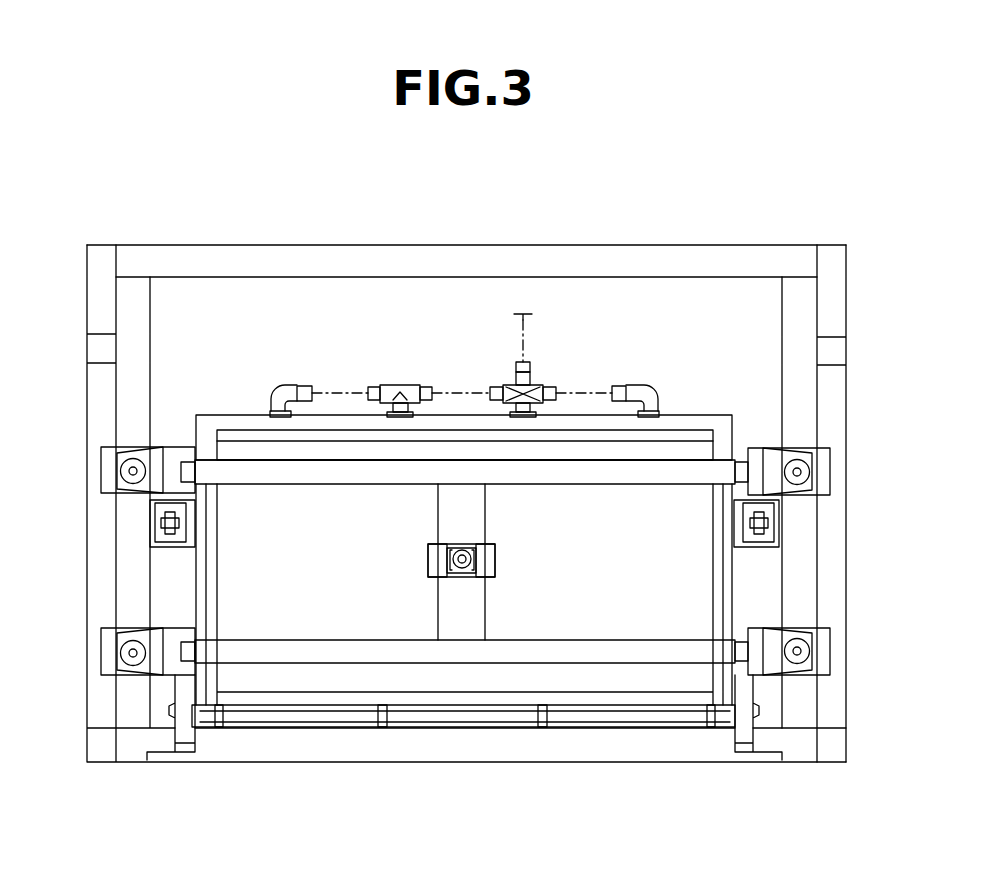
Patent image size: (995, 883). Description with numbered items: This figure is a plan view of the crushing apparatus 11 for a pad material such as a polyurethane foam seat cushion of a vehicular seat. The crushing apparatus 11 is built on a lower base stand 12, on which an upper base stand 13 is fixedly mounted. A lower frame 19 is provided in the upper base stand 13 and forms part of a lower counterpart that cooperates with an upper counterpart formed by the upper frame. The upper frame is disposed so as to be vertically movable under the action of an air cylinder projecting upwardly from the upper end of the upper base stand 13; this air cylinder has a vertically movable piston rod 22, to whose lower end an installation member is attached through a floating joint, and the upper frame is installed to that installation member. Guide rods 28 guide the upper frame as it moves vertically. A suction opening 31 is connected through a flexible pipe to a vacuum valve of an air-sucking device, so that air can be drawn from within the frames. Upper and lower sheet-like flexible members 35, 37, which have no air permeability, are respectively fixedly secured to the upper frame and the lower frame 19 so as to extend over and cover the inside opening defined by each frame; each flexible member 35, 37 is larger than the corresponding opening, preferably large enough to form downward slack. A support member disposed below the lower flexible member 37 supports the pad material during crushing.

The crushing apparatus 11 is at (253, 218).
The lower base stand 12 is at (728, 257).
The upper base stand 13 is at (807, 400).
The lower frame 19 is at (331, 729).
The piston rod 22 is at (463, 572).
The guide rods 28 is at (121, 478).
The suction opening 31 is at (315, 393).
The upper sheet-like flexible member 35 is at (400, 603).
The lower sheet-like flexible member 37 is at (657, 617).